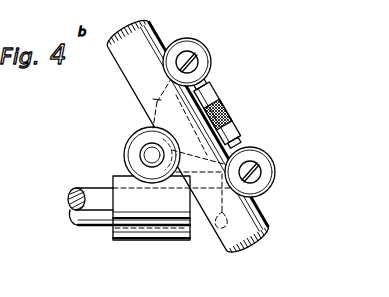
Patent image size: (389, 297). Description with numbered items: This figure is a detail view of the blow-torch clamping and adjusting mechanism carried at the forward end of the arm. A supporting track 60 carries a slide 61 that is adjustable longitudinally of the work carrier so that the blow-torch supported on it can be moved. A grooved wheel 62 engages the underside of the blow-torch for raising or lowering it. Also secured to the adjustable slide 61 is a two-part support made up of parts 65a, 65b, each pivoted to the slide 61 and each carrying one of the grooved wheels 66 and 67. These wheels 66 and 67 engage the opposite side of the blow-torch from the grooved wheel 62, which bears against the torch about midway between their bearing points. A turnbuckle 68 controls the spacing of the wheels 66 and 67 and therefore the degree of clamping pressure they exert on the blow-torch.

The supporting track 60 is at (92, 212).
The slide 61 is at (132, 233).
The grooved wheel 62 is at (124, 153).
The support part 65a is at (156, 101).
The support part 65b is at (235, 125).
The grooved wheel 66 is at (195, 48).
The grooved wheel 67 is at (265, 172).
The turnbuckle 68 is at (230, 112).